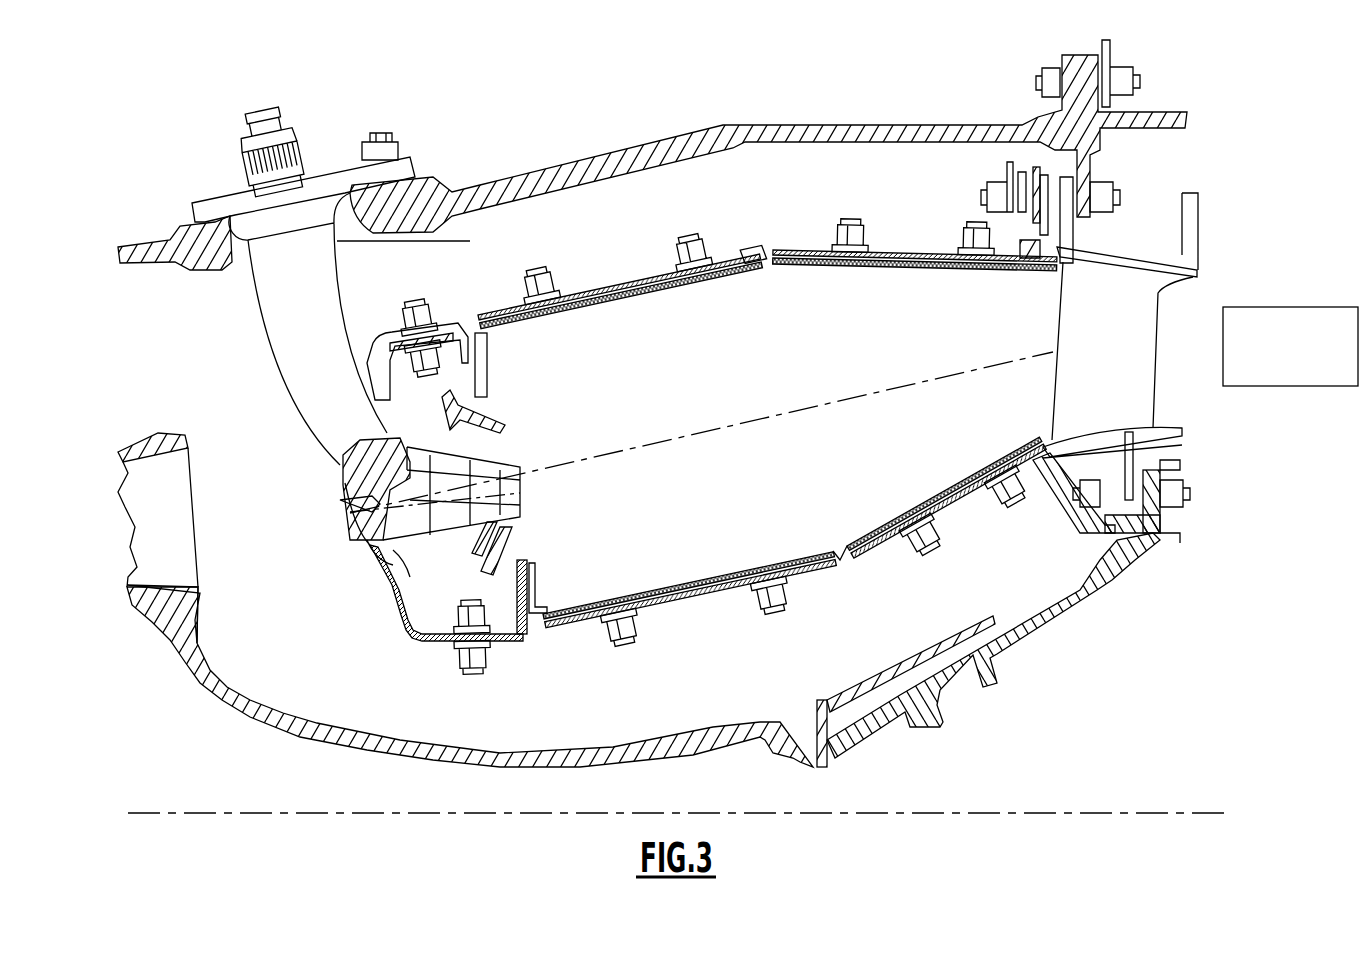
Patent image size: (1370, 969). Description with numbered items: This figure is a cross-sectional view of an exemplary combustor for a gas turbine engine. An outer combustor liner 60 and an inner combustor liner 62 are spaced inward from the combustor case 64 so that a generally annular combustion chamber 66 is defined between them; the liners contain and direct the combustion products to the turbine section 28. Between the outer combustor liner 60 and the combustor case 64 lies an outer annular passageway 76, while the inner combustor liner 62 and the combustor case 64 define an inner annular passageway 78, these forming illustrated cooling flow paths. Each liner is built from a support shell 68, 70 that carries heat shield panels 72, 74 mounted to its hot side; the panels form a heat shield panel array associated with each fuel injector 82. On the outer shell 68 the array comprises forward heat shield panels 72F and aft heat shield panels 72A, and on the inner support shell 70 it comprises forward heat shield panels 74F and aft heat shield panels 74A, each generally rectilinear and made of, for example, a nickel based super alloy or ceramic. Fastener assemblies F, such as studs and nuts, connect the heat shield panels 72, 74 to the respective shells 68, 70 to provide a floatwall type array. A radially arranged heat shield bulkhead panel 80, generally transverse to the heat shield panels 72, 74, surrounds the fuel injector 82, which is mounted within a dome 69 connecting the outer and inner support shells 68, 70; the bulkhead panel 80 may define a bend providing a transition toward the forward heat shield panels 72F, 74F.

The turbine section 28 is at (1308, 359).
The outer combustor liner 60 is at (675, 226).
The inner combustor liner 62 is at (842, 584).
The combustor case 64 is at (957, 118).
The combustion chamber 66 is at (786, 426).
The support shell 68 is at (797, 248).
The dome 69 is at (397, 627).
The support shell 70 is at (813, 568).
The heat shield panels 72 is at (766, 309).
The aft heat shield panels 72A is at (902, 263).
The forward heat shield panels 72F is at (644, 305).
The heat shield panels 74 is at (794, 527).
The aft heat shield panels 74A is at (955, 480).
The forward heat shield panels 74F is at (703, 575).
The outer annular passageway 76 is at (752, 197).
The inner annular passageway 78 is at (675, 704).
The heat shield bulkhead panel 80 is at (513, 384).
The fuel injector 82 is at (342, 470).
The fastener assemblies F is at (555, 283).